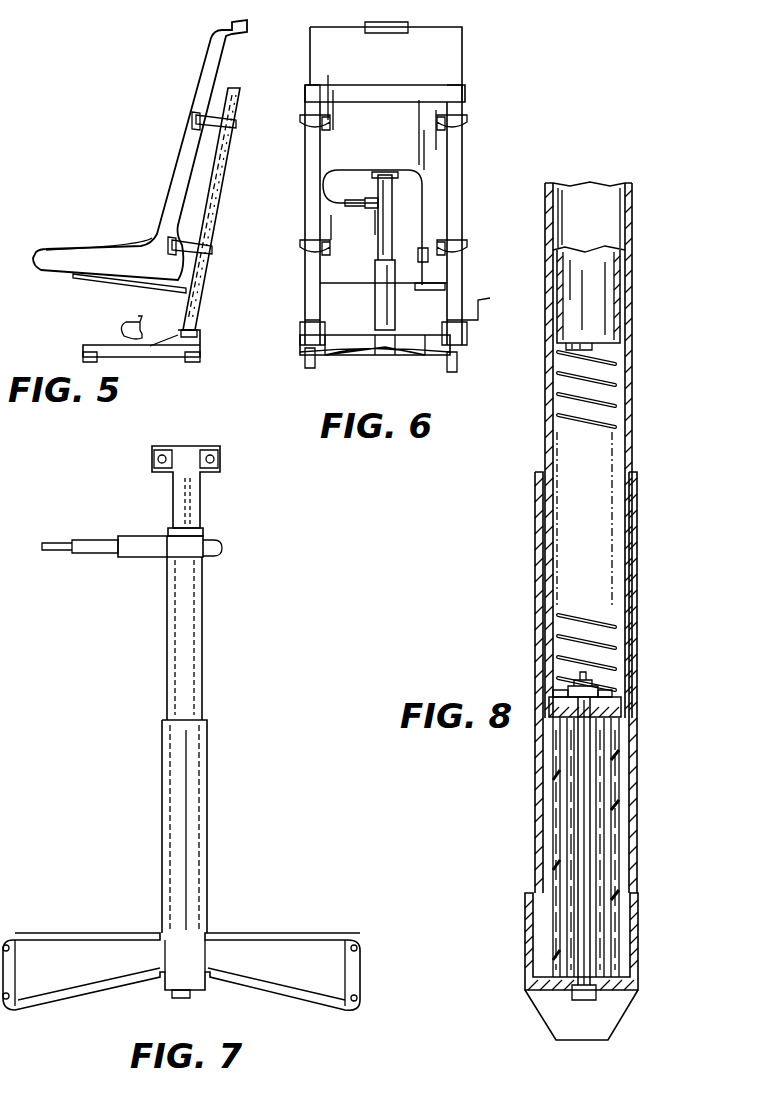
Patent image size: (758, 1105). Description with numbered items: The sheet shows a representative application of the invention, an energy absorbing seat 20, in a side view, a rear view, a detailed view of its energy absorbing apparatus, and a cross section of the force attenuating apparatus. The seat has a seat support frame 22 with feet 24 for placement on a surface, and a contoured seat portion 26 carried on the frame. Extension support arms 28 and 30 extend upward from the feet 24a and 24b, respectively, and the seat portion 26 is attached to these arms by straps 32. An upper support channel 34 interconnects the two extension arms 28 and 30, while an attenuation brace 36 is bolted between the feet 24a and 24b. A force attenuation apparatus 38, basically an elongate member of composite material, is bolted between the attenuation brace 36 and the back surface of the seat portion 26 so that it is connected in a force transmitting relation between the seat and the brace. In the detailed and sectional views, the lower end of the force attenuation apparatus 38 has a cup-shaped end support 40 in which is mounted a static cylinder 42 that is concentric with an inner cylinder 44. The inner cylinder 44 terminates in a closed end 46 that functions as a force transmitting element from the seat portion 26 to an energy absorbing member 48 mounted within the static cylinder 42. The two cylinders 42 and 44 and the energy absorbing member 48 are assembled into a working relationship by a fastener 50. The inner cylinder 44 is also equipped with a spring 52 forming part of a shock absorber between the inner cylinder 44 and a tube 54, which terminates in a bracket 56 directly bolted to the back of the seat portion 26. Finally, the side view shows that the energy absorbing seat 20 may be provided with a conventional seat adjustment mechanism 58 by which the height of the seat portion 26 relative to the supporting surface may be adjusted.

In FIG. 5, the energy absorbing seat 20 is at (126, 172).
In FIG. 5, the seat support frame 22 is at (195, 301).
In FIG. 5, the feet 24 is at (176, 358).
In FIG. 6, the foot 24a is at (316, 360).
In FIG. 6, the foot 24b is at (446, 360).
In FIG. 5, the contoured seat portion 26 is at (80, 256).
In FIG. 6, the contoured seat portion 26 is at (327, 164).
In FIG. 6, the extension support arm 28 is at (310, 208).
In FIG. 6, the extension support arm 30 is at (462, 186).
In FIG. 6, the straps 32 is at (468, 117).
In FIG. 6, the upper support channel 34 is at (418, 96).
In FIG. 6, the attenuation brace 36 is at (408, 336).
In FIG. 7, the attenuation brace 36 is at (300, 938).
In FIG. 6, the force attenuation apparatus 38 is at (390, 250).
In FIG. 7, the force attenuation apparatus 38 is at (190, 833).
In FIG. 8, the force attenuation apparatus 38 is at (513, 570).
In FIG. 8, the cup-shaped end support 40 is at (639, 966).
In FIG. 8, the static cylinder 42 is at (634, 802).
In FIG. 8, the inner cylinder 44 is at (634, 318).
In FIG. 8, the closed end 46 is at (622, 702).
In FIG. 8, the energy absorbing member 48 is at (622, 850).
In FIG. 8, the fastener 50 is at (582, 808).
In FIG. 8, the spring 52 is at (612, 422).
In FIG. 8, the tube 54 is at (598, 224).
In FIG. 7, the bracket 56 is at (192, 452).
In FIG. 5, the seat adjustment mechanism 58 is at (136, 320).